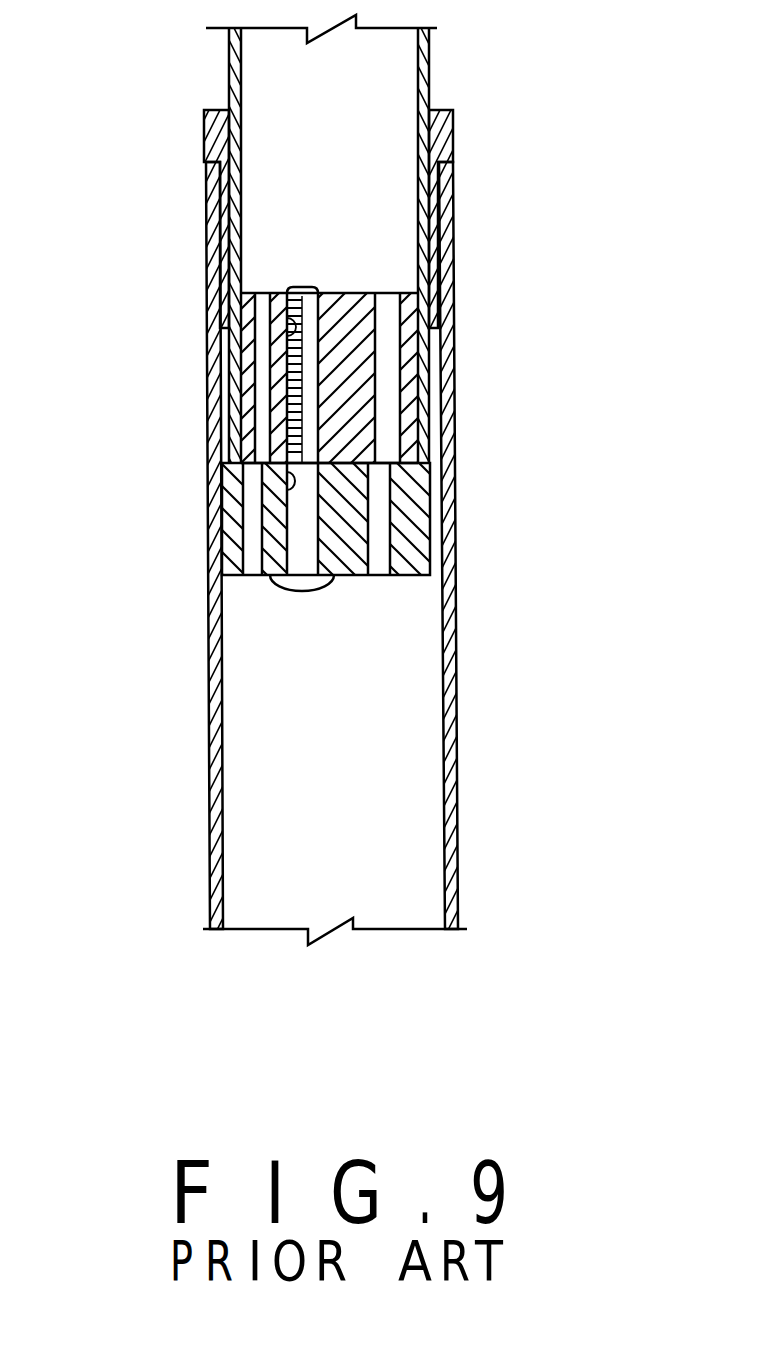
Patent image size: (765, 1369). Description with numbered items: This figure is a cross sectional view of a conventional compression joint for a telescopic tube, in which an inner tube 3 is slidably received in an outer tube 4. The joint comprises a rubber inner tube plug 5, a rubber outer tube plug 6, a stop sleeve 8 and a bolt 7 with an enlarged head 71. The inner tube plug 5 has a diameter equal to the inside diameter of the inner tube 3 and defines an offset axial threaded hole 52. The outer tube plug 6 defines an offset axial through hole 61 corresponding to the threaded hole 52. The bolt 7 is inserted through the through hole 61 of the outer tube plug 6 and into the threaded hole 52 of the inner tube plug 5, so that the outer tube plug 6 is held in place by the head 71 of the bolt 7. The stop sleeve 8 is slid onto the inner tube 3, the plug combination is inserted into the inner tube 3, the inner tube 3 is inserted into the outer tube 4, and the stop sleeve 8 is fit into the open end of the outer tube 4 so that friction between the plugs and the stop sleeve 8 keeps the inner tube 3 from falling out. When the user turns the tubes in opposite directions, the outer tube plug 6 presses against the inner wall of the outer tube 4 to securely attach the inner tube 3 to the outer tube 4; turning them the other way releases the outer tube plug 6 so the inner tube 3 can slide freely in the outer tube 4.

The inner tube 3 is at (428, 48).
The stop sleeve 8 is at (453, 125).
The outer tube 4 is at (447, 704).
The inner tube plug 5 is at (367, 381).
The threaded hole 52 is at (287, 347).
The outer tube plug 6 is at (407, 513).
The through hole 61 is at (292, 491).
The bolt 7 is at (300, 537).
The head 71 is at (303, 583).